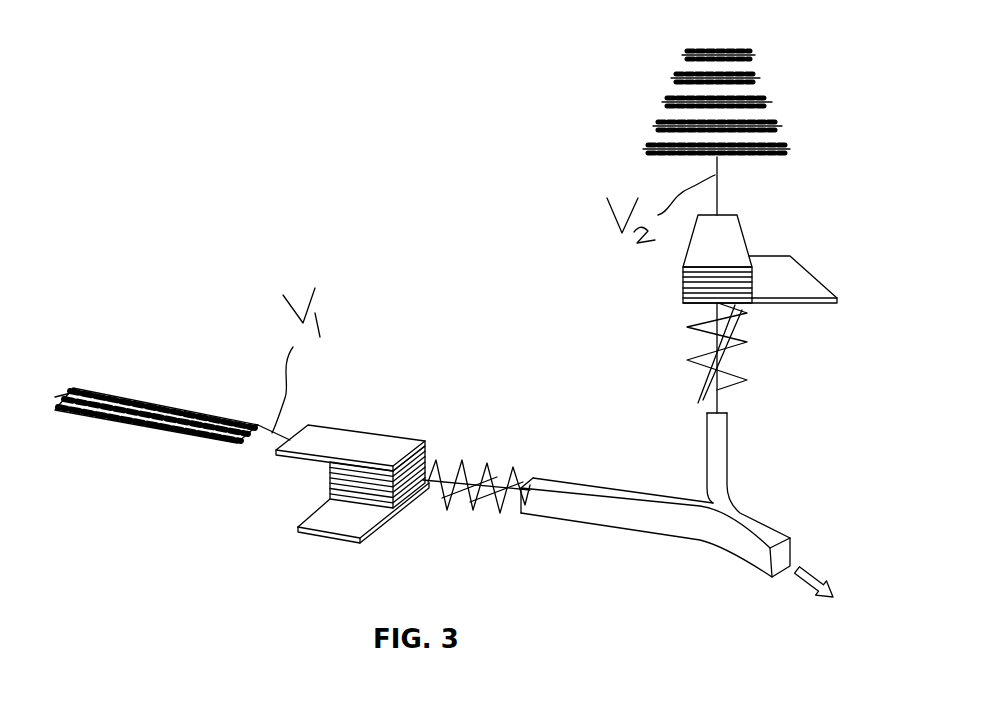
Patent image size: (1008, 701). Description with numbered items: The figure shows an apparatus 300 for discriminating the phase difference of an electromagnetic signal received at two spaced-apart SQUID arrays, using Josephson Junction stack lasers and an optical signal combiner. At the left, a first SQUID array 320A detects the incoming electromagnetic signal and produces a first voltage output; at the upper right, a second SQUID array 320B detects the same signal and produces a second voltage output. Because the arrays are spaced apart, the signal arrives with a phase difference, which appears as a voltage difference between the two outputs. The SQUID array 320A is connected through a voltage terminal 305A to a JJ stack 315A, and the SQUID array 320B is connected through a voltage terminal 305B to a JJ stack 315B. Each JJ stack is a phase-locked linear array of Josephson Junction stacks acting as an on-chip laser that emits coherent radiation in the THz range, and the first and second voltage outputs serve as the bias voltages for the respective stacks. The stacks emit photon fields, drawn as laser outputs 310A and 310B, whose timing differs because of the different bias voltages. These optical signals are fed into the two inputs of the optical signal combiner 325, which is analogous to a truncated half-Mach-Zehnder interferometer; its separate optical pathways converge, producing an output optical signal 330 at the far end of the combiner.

The optical system 300 is at (333, 222).
The voltage terminal 305A is at (350, 437).
The voltage terminal 305B is at (733, 233).
The laser output 310A is at (478, 510).
The laser output 310B is at (690, 360).
The JJ stack 315A is at (327, 482).
The JJ stack 315B is at (683, 282).
The SQUID array 320A is at (140, 432).
The SQUID array 320B is at (765, 81).
The optical signal combiner 325 is at (737, 497).
The output optical signal 330 is at (820, 590).